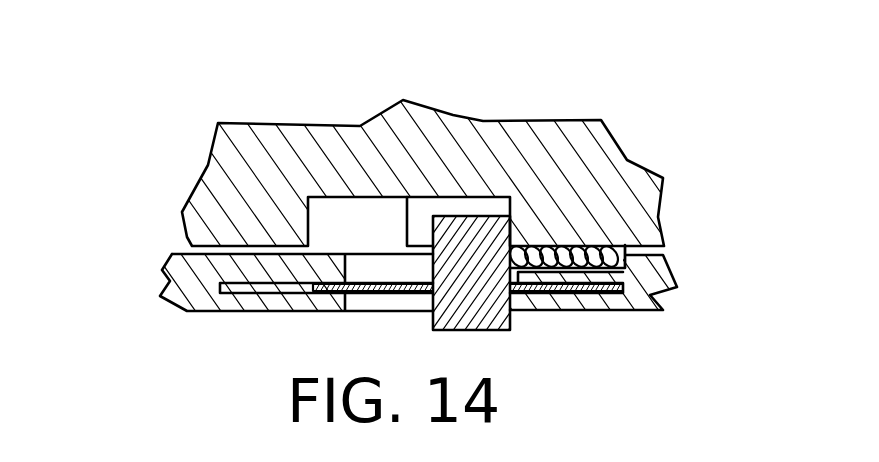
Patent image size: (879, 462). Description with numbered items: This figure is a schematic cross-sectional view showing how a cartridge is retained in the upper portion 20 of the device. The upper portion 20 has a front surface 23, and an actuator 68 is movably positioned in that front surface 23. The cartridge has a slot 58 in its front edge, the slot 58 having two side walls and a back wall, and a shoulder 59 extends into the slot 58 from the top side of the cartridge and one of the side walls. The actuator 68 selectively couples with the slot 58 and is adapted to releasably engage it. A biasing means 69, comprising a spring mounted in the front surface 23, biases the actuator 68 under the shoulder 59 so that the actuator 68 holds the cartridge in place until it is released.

The upper portion 20 is at (175, 283).
The front surface 23 is at (237, 247).
The slot 58 is at (343, 225).
The shoulder 59 is at (415, 210).
The actuator 68 is at (493, 327).
The biasing means 69 is at (667, 258).